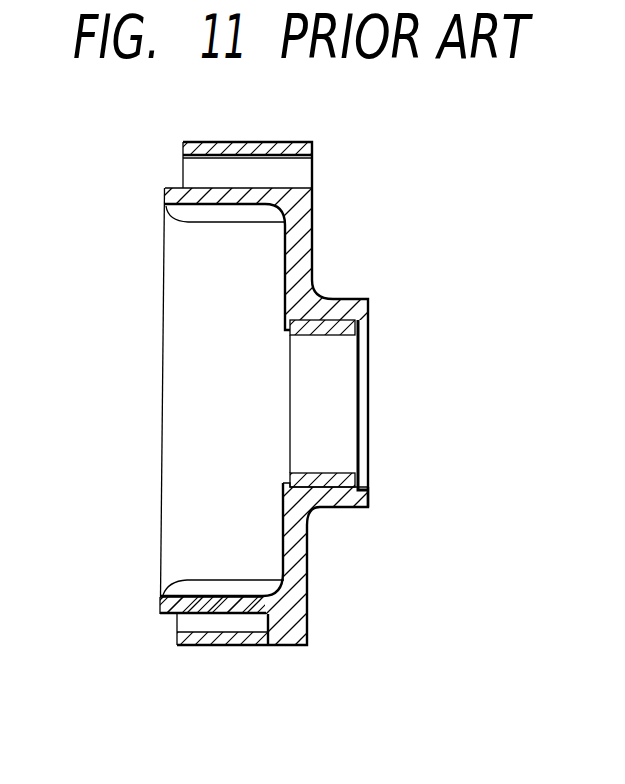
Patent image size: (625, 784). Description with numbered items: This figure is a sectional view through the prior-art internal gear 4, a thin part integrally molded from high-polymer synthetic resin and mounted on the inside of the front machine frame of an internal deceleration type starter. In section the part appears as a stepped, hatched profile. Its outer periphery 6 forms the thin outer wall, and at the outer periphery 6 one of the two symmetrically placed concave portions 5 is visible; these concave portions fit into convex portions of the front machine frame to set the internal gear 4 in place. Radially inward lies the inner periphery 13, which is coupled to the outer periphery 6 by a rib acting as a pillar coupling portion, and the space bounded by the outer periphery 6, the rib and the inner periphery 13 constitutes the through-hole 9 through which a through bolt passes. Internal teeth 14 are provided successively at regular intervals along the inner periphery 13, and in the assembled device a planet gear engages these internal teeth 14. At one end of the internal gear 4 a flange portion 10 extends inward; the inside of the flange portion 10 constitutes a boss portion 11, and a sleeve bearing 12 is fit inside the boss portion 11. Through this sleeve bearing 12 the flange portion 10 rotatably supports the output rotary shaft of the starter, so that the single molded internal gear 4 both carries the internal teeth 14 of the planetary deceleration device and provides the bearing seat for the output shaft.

The internal gear 4 is at (313, 168).
The concave portion 5 is at (288, 630).
The outer periphery 6 is at (258, 142).
The through-hole 9 is at (208, 157).
The flange portion 10 is at (292, 553).
The boss portion 11 is at (353, 496).
The sleeve bearing 12 is at (330, 473).
The inner periphery 13 is at (162, 193).
The internal teeth 14 is at (193, 212).